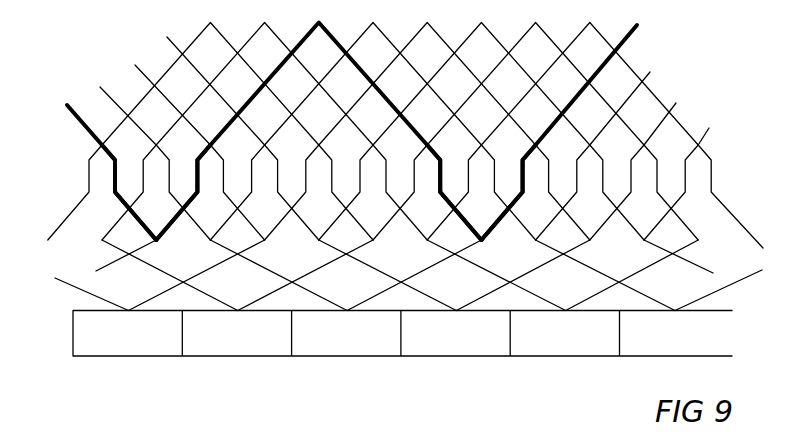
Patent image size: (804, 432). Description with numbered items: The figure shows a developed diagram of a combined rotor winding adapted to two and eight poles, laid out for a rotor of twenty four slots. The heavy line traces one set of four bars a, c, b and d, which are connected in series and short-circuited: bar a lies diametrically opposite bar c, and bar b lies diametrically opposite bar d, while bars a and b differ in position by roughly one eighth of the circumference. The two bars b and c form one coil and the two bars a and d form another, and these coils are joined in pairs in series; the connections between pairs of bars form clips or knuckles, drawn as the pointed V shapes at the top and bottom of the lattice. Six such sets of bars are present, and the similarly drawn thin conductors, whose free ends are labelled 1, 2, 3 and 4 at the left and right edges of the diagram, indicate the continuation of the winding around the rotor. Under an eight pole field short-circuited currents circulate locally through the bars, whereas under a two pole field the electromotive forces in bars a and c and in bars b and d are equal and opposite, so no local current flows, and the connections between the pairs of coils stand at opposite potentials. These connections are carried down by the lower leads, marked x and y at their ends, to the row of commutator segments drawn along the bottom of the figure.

The first phase winding conductor (heavy line coil) 1 is at (377, 140).
The second phase winding conductor 2 is at (420, 186).
The third phase winding conductor 3 is at (405, 98).
The fourth phase winding conductor 4 is at (439, 84).
The bar a is at (126, 192).
The bar b is at (183, 192).
The bar c is at (452, 192).
The bar d is at (508, 192).
The end connection to commutator segment x is at (389, 275).
The end connection to commutator segment y is at (396, 288).